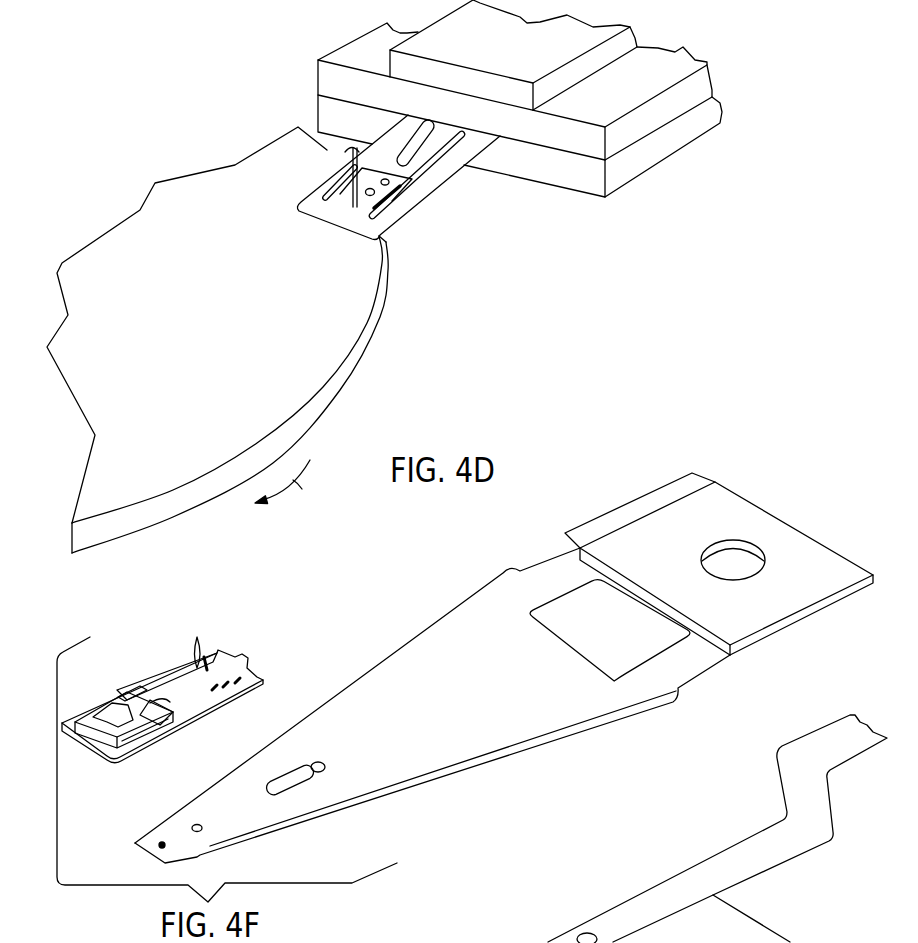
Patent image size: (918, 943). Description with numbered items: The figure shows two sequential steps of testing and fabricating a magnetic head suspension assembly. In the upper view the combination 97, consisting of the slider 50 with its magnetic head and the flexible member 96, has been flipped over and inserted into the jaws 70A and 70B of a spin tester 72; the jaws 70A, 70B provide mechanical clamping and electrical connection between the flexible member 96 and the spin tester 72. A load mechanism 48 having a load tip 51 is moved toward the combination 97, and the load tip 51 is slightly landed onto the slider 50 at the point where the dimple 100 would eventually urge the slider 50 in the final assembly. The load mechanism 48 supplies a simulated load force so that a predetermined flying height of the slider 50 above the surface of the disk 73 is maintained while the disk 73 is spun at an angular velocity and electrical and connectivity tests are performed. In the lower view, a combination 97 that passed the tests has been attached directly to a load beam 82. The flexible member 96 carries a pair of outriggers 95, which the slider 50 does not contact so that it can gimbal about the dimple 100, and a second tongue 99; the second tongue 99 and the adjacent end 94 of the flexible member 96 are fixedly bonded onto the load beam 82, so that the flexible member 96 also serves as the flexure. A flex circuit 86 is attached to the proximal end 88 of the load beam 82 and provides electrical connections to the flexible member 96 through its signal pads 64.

In FIG. 4D, the jaw 70A is at (658, 72).
In FIG. 4D, the jaw 70B is at (655, 153).
In FIG. 4D, the spin tester 72 is at (243, 134).
In FIG. 4D, the disk 73 is at (287, 398).
In FIG. 4D, the load mechanism 48 is at (328, 148).
In FIG. 4D, the load tip 51 is at (352, 167).
In FIG. 4D, the combination 97 is at (456, 195).
In FIG. 4F, the combination 97 is at (174, 652).
In FIG. 4F, the load beam 82 is at (382, 662).
In FIG. 4F, the flexible member 96 is at (200, 728).
In FIG. 4F, the slider 50 is at (90, 704).
In FIG. 4F, the outriggers 95 is at (138, 690).
In FIG. 4F, the second tongue 99 is at (162, 697).
In FIG. 4F, the signal pads 64 is at (195, 665).
In FIG. 4F, the adjacent end 94 is at (243, 668).
In FIG. 4F, the dimple 100 is at (162, 845).
In FIG. 4F, the flex circuit 86 is at (715, 873).
In FIG. 4F, the proximal end 88 is at (608, 918).